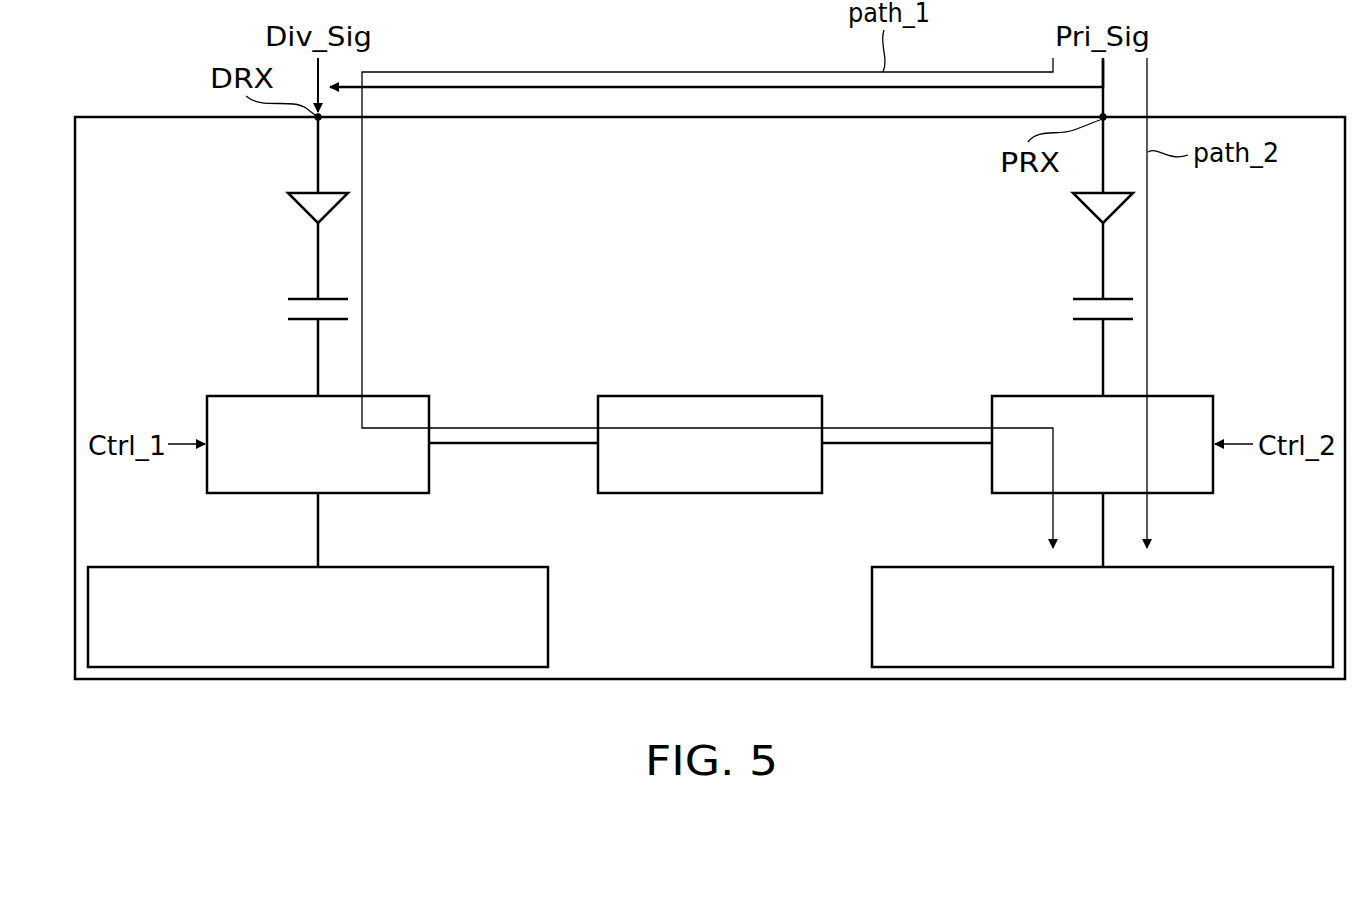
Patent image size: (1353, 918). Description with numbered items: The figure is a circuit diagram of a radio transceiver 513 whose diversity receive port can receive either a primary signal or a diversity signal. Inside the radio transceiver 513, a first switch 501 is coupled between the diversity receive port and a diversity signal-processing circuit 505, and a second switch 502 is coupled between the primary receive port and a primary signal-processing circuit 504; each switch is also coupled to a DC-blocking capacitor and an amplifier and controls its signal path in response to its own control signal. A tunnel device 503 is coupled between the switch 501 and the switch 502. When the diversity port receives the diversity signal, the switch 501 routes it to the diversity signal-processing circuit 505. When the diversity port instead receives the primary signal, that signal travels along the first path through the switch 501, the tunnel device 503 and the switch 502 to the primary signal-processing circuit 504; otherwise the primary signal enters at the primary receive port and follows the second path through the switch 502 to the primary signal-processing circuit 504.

The switch 501 is at (207, 396).
The switch 502 is at (1183, 396).
The tunnel device 503 is at (598, 396).
The primary signal-processing circuit 504 is at (872, 567).
The diversity signal-processing circuit 505 is at (88, 567).
The radio transceiver 513 is at (735, 192).